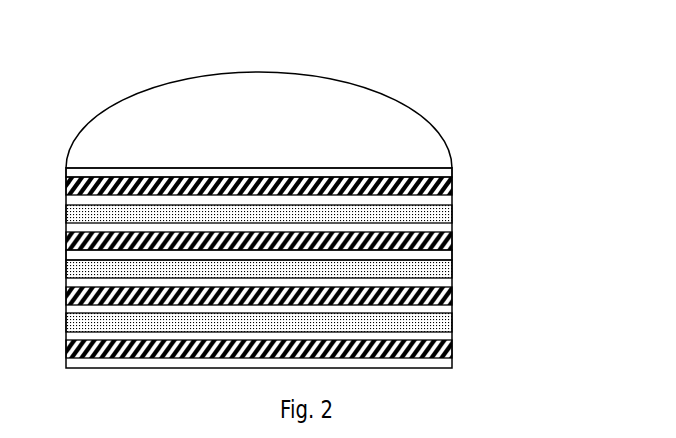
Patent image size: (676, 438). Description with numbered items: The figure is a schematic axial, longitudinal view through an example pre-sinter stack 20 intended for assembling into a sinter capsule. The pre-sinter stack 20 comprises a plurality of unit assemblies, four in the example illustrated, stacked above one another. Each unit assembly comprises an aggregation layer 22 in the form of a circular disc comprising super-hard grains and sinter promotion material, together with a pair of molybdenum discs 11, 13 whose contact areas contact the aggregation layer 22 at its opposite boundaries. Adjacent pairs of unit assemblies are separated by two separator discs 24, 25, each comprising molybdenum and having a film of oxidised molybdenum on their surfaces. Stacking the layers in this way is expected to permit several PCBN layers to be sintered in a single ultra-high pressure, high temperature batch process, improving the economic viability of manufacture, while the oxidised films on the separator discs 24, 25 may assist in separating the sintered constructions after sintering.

The pre-sinter stack 20 is at (153, 72).
The molybdenum disc 11 is at (452, 172).
The aggregation layer 22 is at (452, 186).
The molybdenum disc 13 is at (452, 200).
The separator disc 24 is at (452, 263).
The separator disc 25 is at (452, 273).